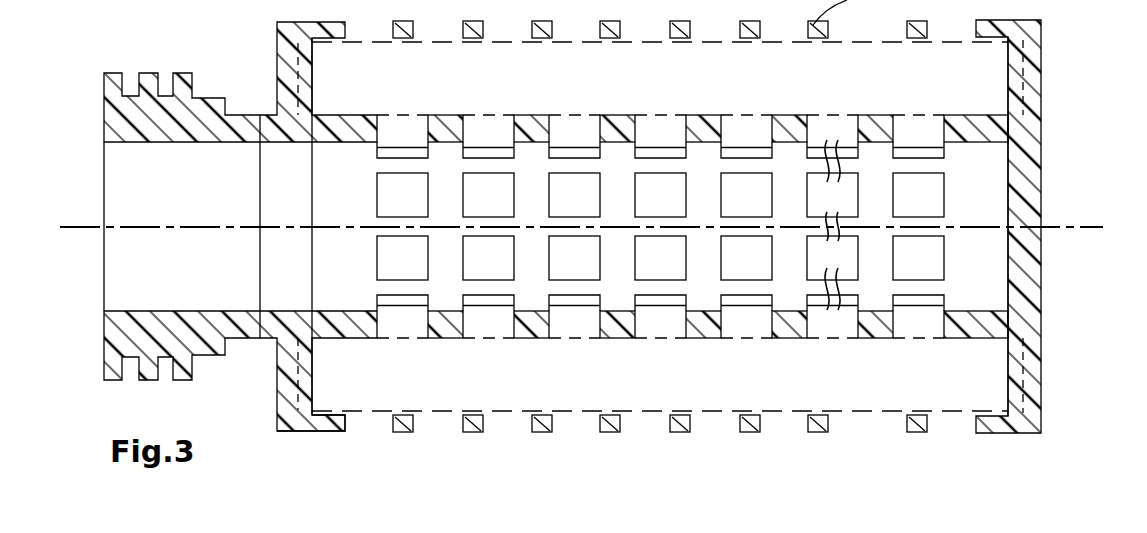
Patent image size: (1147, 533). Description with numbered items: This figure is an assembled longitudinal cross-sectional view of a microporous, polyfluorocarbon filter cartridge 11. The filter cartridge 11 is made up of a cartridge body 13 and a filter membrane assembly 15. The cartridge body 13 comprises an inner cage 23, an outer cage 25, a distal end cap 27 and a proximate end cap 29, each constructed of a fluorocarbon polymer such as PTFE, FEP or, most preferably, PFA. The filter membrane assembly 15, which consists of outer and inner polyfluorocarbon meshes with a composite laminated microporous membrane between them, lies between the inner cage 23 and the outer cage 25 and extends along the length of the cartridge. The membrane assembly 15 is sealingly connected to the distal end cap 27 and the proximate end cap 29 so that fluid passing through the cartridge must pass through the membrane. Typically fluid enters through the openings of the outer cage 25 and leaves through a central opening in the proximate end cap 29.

The filter cartridge 11 is at (672, 455).
The cartridge body 13 is at (290, 57).
The filter membrane assembly 15 is at (669, 91).
The inner cage 23 is at (452, 323).
The outer cage 25 is at (538, 433).
The distal end cap 27 is at (1032, 100).
The proximate end cap 29 is at (290, 427).